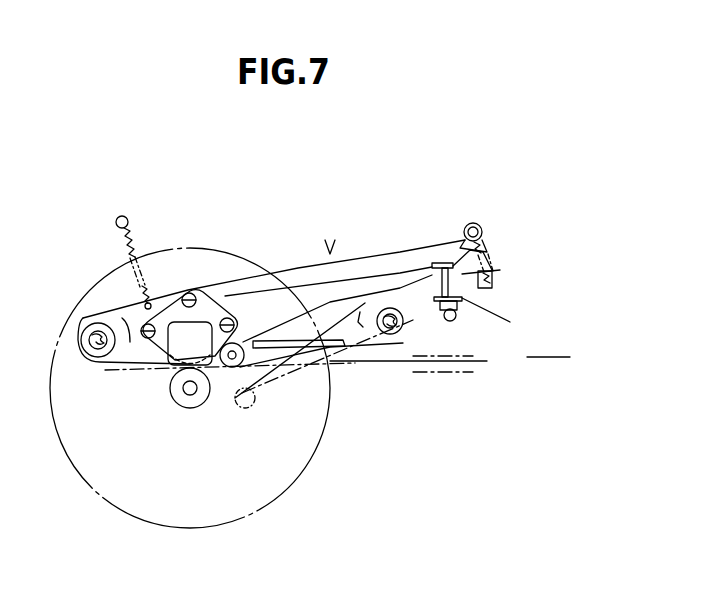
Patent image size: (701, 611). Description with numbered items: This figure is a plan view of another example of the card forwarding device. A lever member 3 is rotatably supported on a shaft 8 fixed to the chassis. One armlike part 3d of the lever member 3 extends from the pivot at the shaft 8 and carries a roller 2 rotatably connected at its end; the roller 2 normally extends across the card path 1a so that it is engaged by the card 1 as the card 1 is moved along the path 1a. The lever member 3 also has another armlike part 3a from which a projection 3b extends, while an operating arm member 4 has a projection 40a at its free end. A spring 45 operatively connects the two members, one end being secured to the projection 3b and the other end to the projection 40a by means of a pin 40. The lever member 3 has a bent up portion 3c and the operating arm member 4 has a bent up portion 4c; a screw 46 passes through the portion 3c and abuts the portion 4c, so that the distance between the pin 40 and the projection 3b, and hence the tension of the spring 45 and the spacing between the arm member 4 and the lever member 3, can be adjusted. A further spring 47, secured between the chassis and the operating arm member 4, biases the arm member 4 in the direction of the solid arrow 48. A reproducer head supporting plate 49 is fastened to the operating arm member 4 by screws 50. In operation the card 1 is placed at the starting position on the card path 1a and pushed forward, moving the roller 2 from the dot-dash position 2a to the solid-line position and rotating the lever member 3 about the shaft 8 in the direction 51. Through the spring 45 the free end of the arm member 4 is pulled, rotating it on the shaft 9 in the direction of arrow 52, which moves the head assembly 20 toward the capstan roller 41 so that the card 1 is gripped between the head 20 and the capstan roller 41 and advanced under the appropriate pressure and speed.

The card 1 is at (452, 362).
The card path 1a is at (440, 372).
The roller 2 is at (224, 365).
The roller position 2a is at (252, 405).
The lever member 3 is at (350, 340).
The armlike part 3a is at (492, 273).
The projection 3b is at (494, 287).
The bent up portion 3c is at (462, 297).
The armlike part 3d is at (280, 340).
The operating arm member 4 is at (298, 270).
The bent up portion 4c is at (437, 260).
The shaft 8 is at (390, 321).
The shaft 9 is at (88, 337).
The head assembly 20 is at (180, 333).
The pin 40 is at (471, 223).
The projection 40a is at (478, 226).
The capstan roller 41 is at (185, 403).
The spring 45 is at (483, 240).
The screw 46 is at (456, 314).
The spring 47 is at (137, 257).
The arrow 48 is at (95, 318).
The reproducer head supporting plate 49 is at (213, 310).
The screws 50 is at (190, 298).
The direction 51 is at (362, 310).
The arrow 52 is at (333, 257).